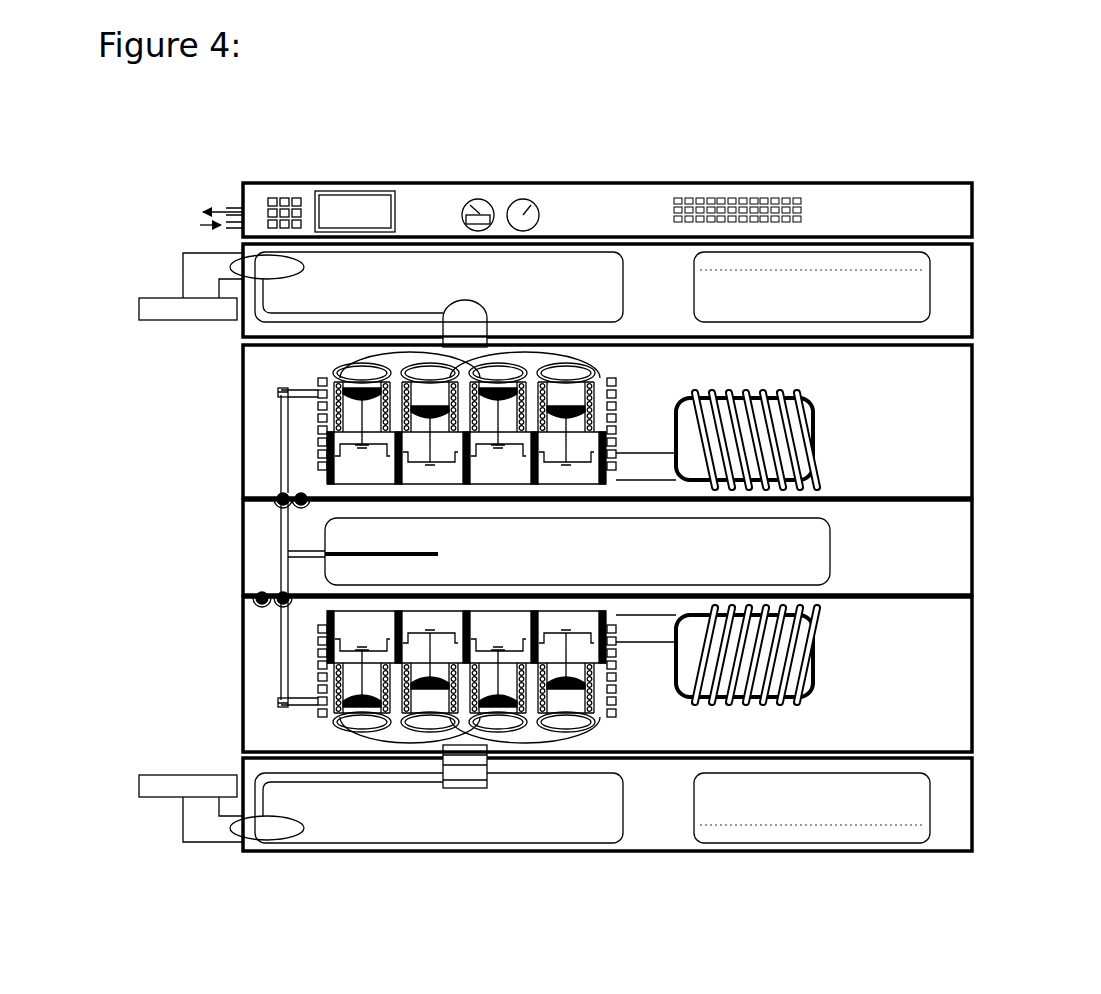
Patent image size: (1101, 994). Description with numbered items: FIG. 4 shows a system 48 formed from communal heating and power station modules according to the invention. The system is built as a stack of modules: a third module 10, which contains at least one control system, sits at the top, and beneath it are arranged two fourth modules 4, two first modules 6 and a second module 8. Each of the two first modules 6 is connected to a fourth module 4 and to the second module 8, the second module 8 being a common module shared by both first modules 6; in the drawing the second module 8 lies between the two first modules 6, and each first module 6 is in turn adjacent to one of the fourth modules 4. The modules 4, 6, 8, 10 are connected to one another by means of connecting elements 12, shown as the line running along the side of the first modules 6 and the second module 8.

The engine power unit 48 is at (868, 170).
The third module 10 is at (977, 212).
The fourth module 4 is at (977, 303).
The first module 6 is at (977, 410).
The second module 8 is at (977, 535).
The connecting element 12 is at (275, 486).